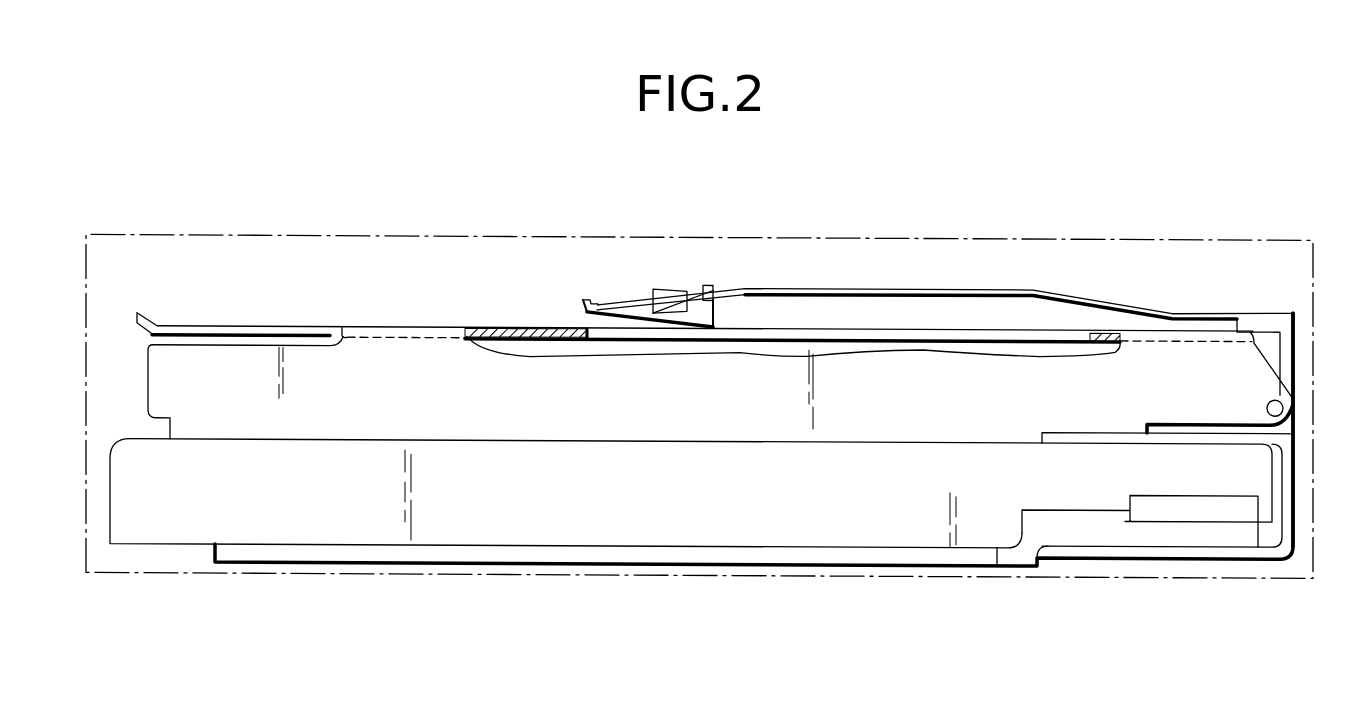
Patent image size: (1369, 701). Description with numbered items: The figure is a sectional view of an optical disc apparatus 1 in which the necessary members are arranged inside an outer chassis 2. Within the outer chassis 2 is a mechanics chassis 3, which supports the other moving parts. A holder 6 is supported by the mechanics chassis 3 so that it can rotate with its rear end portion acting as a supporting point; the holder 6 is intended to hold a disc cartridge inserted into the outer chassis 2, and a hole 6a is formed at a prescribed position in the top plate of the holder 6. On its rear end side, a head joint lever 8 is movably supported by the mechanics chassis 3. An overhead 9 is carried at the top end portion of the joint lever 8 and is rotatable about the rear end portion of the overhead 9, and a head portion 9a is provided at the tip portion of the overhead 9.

The optical disc apparatus 1 is at (1100, 208).
The outer chassis 2 is at (997, 234).
The mechanics chassis 3 is at (607, 524).
The holder 6 is at (405, 364).
The hole 6a is at (592, 324).
The head joint lever 8 is at (1295, 364).
The overhead 9 is at (897, 285).
The head portion 9a is at (611, 296).